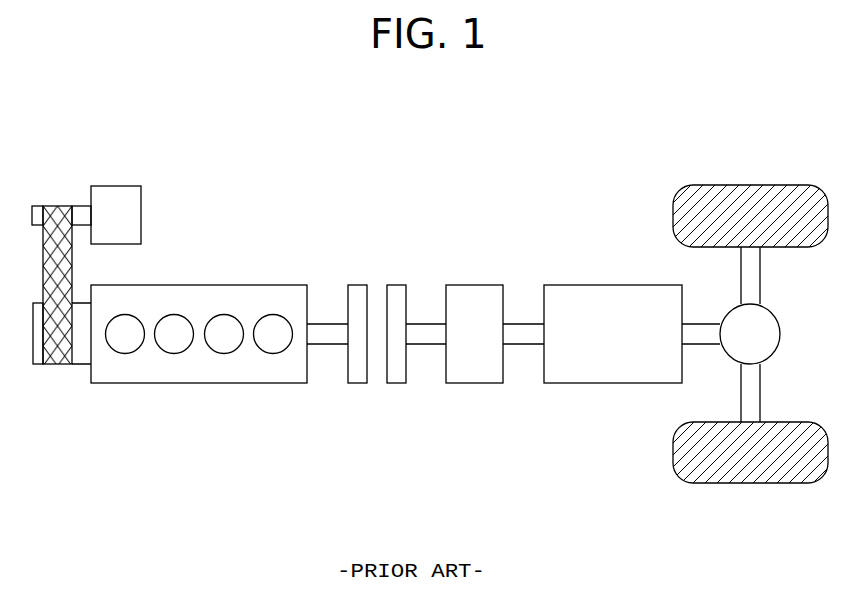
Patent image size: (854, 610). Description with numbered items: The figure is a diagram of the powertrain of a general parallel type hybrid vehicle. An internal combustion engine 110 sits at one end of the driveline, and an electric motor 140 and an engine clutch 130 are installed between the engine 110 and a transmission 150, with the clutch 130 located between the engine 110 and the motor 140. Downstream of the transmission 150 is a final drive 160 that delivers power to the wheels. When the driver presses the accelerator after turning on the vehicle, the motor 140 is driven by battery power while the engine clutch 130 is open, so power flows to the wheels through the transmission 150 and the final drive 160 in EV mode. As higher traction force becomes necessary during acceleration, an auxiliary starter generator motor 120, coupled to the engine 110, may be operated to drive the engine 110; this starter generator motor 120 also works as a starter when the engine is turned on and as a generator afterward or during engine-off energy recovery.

The internal combustion engine 110 is at (265, 285).
The starter generator motor 120 is at (141, 198).
The engine clutch 130 is at (397, 285).
The electric motor 140 is at (475, 285).
The transmission 150 is at (640, 285).
The final drive 160 is at (778, 323).